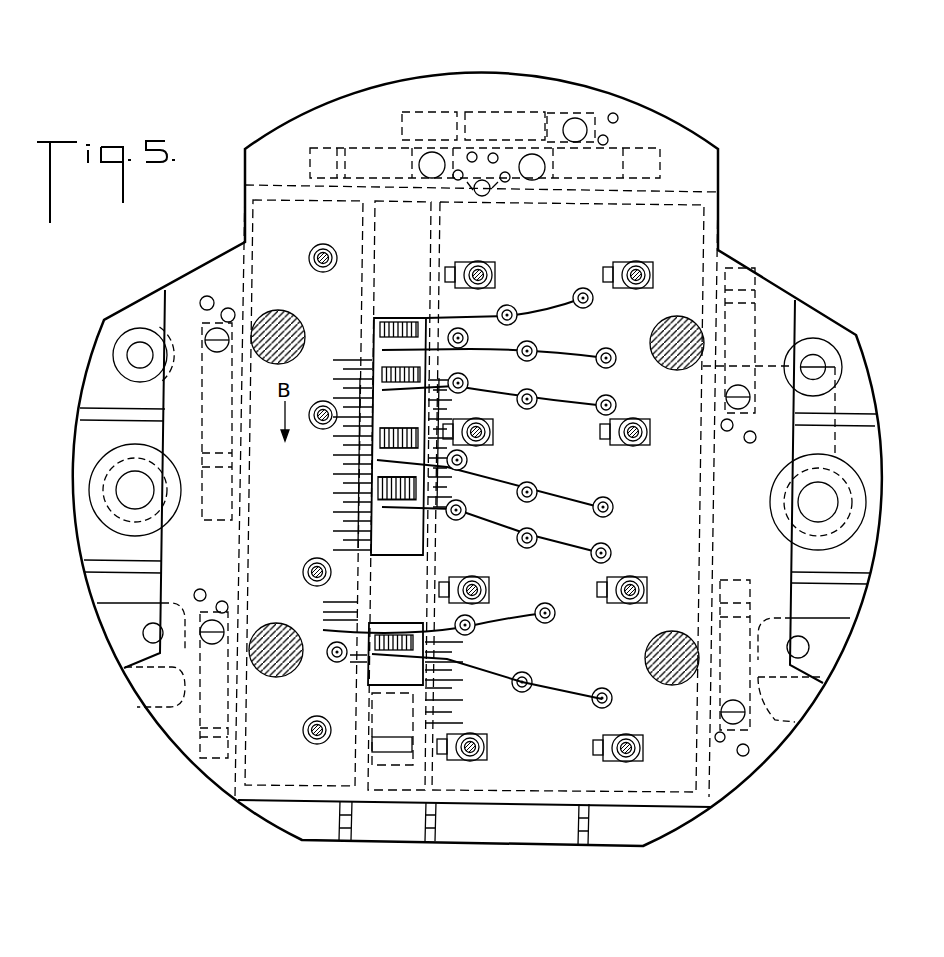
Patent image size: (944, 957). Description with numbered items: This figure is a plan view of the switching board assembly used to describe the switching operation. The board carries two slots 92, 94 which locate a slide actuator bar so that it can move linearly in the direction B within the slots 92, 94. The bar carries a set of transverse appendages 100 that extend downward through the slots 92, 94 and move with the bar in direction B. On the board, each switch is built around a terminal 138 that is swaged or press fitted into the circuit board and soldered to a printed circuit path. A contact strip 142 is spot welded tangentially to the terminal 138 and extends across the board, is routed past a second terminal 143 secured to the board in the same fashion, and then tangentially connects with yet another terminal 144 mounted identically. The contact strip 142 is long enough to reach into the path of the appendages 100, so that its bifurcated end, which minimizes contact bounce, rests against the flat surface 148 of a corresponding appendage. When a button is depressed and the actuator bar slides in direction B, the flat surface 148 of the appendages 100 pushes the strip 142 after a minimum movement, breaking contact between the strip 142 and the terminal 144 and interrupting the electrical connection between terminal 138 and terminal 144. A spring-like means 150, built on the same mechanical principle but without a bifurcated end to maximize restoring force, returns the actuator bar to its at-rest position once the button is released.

The slot 92 is at (377, 545).
The slot 94 is at (370, 676).
The transverse appendages 100 is at (356, 493).
The terminal 138 is at (613, 552).
The contact strip 142 is at (505, 526).
The second terminal 143 is at (526, 549).
The terminal 144 is at (464, 509).
The flat surface 148 is at (393, 503).
The spring-like means 150 is at (554, 686).